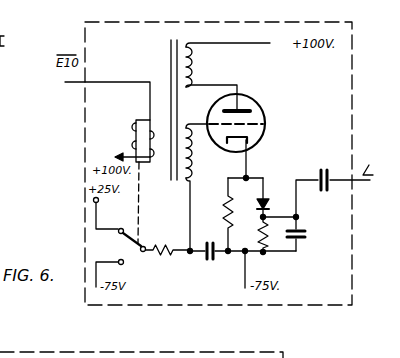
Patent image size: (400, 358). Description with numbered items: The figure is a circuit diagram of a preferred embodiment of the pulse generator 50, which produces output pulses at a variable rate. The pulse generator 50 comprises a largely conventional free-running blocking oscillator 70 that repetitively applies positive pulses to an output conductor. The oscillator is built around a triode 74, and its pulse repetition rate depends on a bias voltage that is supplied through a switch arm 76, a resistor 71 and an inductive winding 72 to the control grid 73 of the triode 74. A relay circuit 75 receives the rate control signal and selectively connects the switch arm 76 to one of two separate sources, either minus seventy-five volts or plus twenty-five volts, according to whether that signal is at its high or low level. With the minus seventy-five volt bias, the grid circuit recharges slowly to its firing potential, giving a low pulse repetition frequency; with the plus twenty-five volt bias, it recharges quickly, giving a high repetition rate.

The pulse generator 50 is at (323, 305).
The blocking oscillator 70 is at (271, 122).
The resistor 71 is at (168, 255).
The inductive winding 72 is at (198, 171).
The control grid 73 is at (265, 124).
The triode 74 is at (262, 103).
The relay circuit 75 is at (128, 125).
The switch arm 76 is at (146, 252).